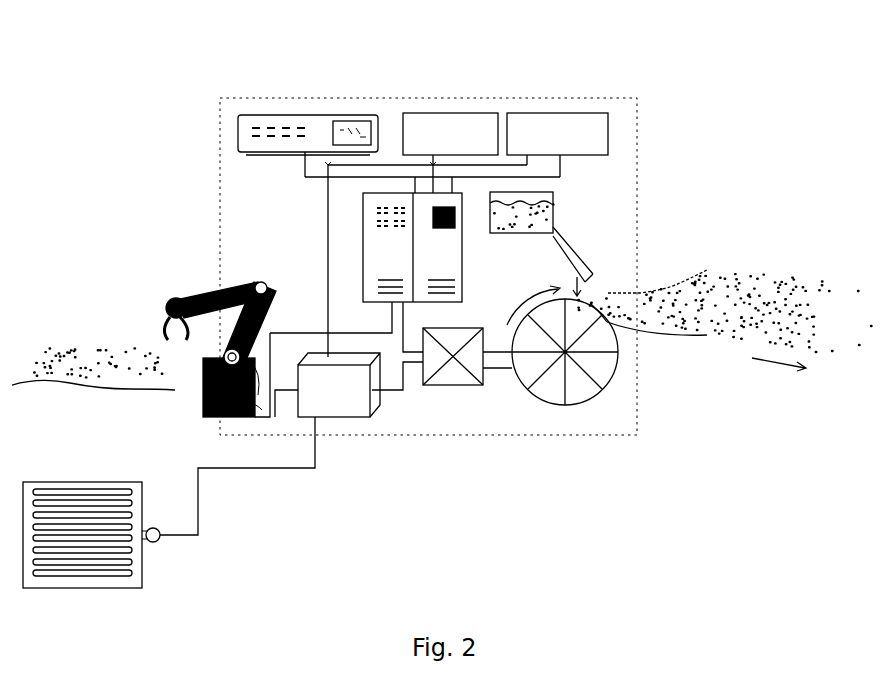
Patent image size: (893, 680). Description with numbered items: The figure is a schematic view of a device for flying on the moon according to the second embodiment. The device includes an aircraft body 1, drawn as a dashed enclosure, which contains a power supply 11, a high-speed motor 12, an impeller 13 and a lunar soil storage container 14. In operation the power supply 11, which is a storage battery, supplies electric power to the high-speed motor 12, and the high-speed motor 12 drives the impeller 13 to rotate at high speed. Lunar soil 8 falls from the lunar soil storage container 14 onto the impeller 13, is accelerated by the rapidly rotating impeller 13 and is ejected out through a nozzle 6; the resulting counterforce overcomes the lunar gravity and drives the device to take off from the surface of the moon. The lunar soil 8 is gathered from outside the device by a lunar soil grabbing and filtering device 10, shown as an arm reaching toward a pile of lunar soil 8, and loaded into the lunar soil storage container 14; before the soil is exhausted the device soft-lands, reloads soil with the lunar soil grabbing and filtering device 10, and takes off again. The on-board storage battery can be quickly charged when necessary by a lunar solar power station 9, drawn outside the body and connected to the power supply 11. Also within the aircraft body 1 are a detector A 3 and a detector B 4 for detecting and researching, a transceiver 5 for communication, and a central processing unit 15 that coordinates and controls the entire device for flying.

The aircraft body 1 is at (612, 98).
The detector A 3 is at (517, 127).
The detector B 4 is at (422, 127).
The transceiver 5 is at (307, 120).
The nozzle 6 is at (681, 283).
The lunar soil 8 is at (745, 283).
The solar power station 9 is at (90, 483).
The lunar soil grabbing and filtering device 10 is at (217, 285).
The power supply 11 is at (350, 403).
The high-speed motor 12 is at (447, 400).
The impeller 13 is at (548, 393).
The lunar soil storage container 14 is at (557, 203).
The central processing unit 15 is at (362, 250).